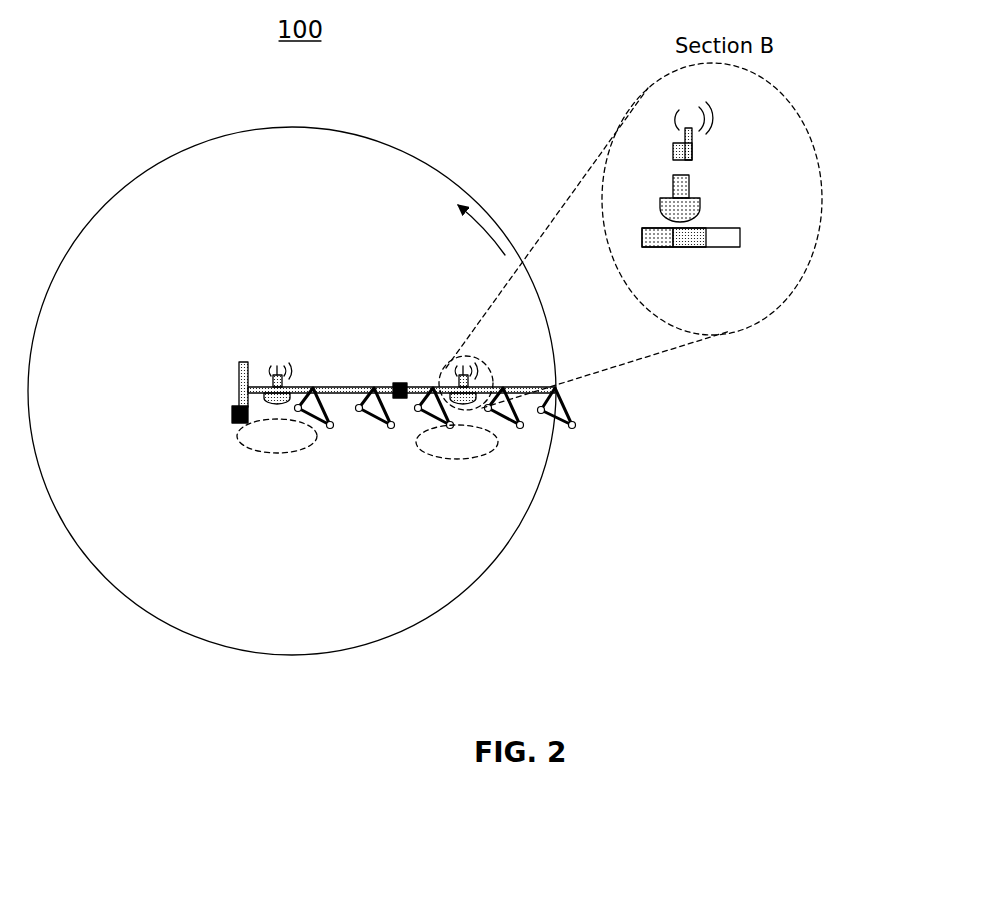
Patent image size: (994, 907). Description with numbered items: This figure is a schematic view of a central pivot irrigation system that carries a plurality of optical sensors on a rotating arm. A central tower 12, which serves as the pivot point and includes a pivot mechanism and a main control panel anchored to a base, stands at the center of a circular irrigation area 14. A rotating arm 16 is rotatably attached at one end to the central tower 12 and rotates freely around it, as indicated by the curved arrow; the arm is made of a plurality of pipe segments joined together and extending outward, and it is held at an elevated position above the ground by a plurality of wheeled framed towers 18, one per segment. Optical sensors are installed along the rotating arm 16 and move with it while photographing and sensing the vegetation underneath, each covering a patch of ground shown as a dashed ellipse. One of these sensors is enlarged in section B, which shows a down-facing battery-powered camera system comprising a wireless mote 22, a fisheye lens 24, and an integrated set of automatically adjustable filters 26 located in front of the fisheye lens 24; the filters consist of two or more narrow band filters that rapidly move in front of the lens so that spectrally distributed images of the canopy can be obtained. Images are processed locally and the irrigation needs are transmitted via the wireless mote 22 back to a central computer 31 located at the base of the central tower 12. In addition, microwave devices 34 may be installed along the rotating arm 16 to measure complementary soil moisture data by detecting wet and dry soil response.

The irrigation area 14 is at (305, 231).
The central tower 12 is at (243, 362).
The rotating arm 16 is at (352, 387).
The wheeled framed towers 18 is at (380, 436).
The wireless mote 22 is at (708, 149).
The fisheye lens 24 is at (715, 198).
The automatically adjustable filters 26 is at (750, 238).
The central computer 31 is at (232, 412).
The microwave devices 34 is at (398, 383).
The section B is at (446, 368).